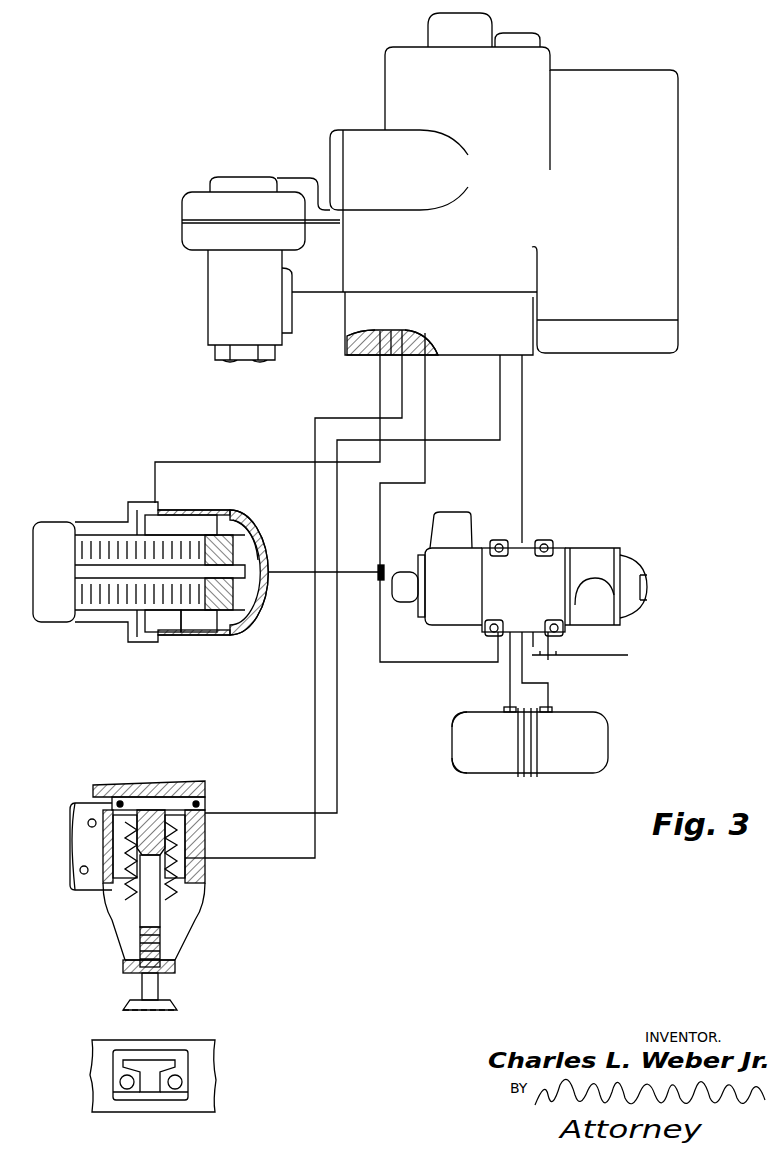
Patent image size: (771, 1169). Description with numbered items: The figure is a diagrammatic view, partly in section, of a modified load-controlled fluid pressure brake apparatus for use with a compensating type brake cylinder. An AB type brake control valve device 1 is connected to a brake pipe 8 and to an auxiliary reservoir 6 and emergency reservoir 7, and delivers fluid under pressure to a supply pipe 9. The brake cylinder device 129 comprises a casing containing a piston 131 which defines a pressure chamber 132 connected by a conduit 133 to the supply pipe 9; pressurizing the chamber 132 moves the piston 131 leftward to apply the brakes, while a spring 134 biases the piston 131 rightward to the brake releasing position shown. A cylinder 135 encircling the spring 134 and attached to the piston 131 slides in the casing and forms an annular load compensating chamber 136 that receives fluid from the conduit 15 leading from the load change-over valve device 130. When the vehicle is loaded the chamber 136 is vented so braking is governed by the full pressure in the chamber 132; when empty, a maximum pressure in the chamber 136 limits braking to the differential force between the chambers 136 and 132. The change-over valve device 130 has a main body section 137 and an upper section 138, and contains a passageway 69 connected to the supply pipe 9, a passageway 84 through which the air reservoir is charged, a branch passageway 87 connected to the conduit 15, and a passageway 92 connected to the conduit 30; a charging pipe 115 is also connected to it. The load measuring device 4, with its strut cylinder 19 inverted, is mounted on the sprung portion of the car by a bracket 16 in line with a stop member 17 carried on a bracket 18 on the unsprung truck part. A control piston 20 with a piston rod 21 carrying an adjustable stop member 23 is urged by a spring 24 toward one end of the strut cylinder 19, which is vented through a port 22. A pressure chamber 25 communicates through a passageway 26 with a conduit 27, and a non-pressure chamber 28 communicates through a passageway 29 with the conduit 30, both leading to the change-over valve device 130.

The brake control valve device 1 is at (609, 548).
The load measuring device 4 is at (161, 894).
The auxiliary reservoir 6 is at (600, 744).
The emergency reservoir 7 is at (456, 741).
The brake pipe 8 is at (565, 658).
The supply pipe 9 is at (426, 390).
The conduit 15 is at (380, 375).
The bracket 16 is at (72, 859).
The stop member 17 is at (130, 1075).
The bracket 18 is at (210, 1078).
The strut cylinder 19 is at (102, 848).
The control piston 20 is at (205, 795).
The piston rod 21 is at (153, 920).
The port 22 is at (122, 905).
The stop member 23 is at (175, 967).
The spring 24 is at (167, 867).
The pressure chamber 25 is at (118, 800).
The passageway 26 is at (203, 816).
The conduit 27 is at (500, 375).
The non-pressure chamber 28 is at (118, 870).
The passageway 29 is at (200, 858).
The conduit 30 is at (402, 399).
The passageway 69 is at (425, 342).
The passageway 84 is at (352, 334).
The branch passageway 87 is at (348, 350).
The passageway 92 is at (397, 335).
The charging pipe 115 is at (522, 381).
The brake cylinder device 129 is at (168, 570).
The load change-over valve device 130 is at (563, 199).
The piston 131 is at (252, 553).
The pressure chamber 132 is at (250, 524).
The conduit 133 is at (293, 574).
The spring 134 is at (188, 540).
The cylinder 135 is at (177, 633).
The load compensating chamber 136 is at (198, 634).
The main body section 137 is at (217, 297).
The upper section 138 is at (190, 210).